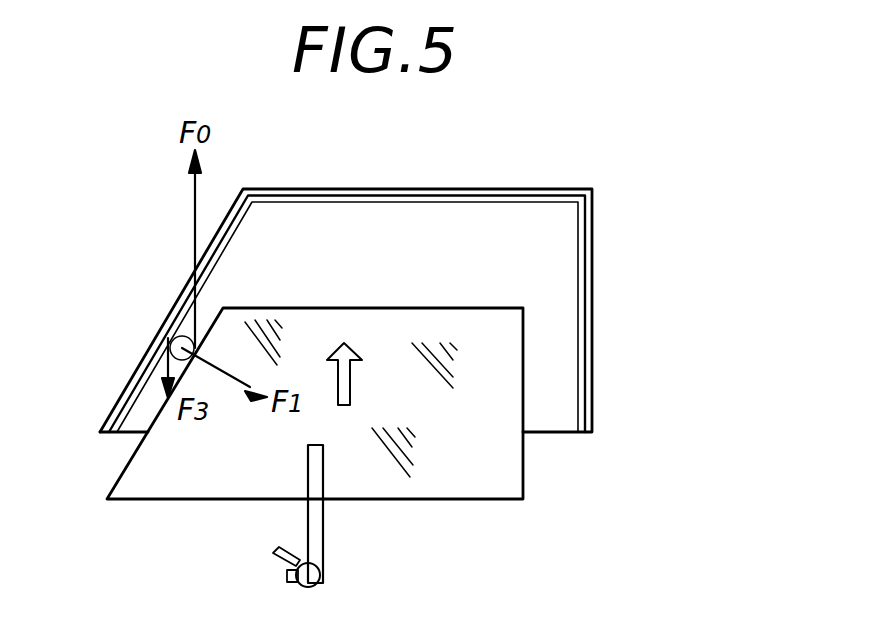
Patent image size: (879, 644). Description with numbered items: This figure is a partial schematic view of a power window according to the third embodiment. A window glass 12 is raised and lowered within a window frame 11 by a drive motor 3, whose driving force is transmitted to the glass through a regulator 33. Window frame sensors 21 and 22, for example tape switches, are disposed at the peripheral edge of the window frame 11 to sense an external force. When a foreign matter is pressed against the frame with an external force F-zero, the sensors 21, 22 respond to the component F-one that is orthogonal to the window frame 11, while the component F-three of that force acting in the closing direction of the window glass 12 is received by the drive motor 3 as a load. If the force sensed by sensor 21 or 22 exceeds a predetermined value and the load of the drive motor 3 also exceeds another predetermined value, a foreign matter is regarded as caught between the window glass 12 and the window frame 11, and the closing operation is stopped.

The drive motor 3 is at (320, 580).
The window frame 11 is at (473, 178).
The window glass 12 is at (523, 383).
The window frame sensor 21 is at (169, 331).
The window frame sensor 22 is at (583, 255).
The regulator 33 is at (325, 538).